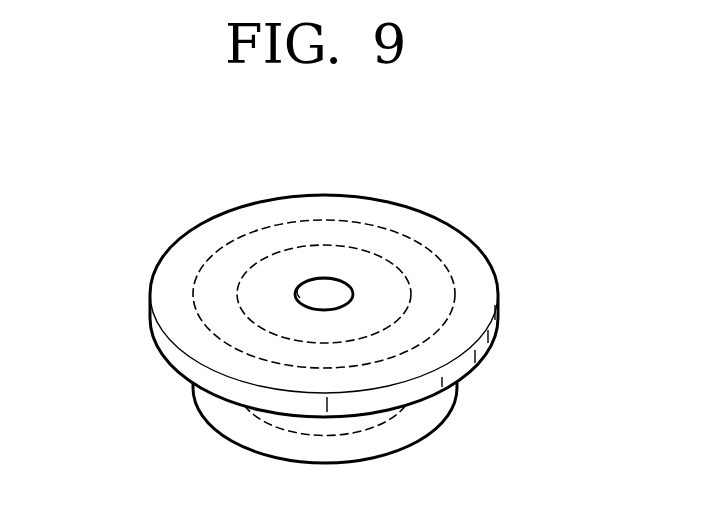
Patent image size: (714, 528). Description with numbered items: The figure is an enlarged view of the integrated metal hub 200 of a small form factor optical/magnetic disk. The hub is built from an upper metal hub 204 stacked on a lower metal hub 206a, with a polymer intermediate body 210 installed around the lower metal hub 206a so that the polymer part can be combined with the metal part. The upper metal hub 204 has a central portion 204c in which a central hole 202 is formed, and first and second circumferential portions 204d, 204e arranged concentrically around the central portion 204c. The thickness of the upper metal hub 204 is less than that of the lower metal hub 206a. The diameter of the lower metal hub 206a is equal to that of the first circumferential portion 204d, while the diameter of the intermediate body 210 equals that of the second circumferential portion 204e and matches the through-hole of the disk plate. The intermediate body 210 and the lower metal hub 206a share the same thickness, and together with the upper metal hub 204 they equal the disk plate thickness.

The integrated metal hub 200 is at (120, 223).
The central hole 202 is at (320, 297).
The upper metal hub 204 is at (498, 322).
The central portion 204c is at (385, 277).
The first circumferential portion 204d is at (430, 268).
The second circumferential portion 204e is at (478, 275).
The lower metal hub 206a is at (373, 418).
The intermediate body 210 is at (213, 413).